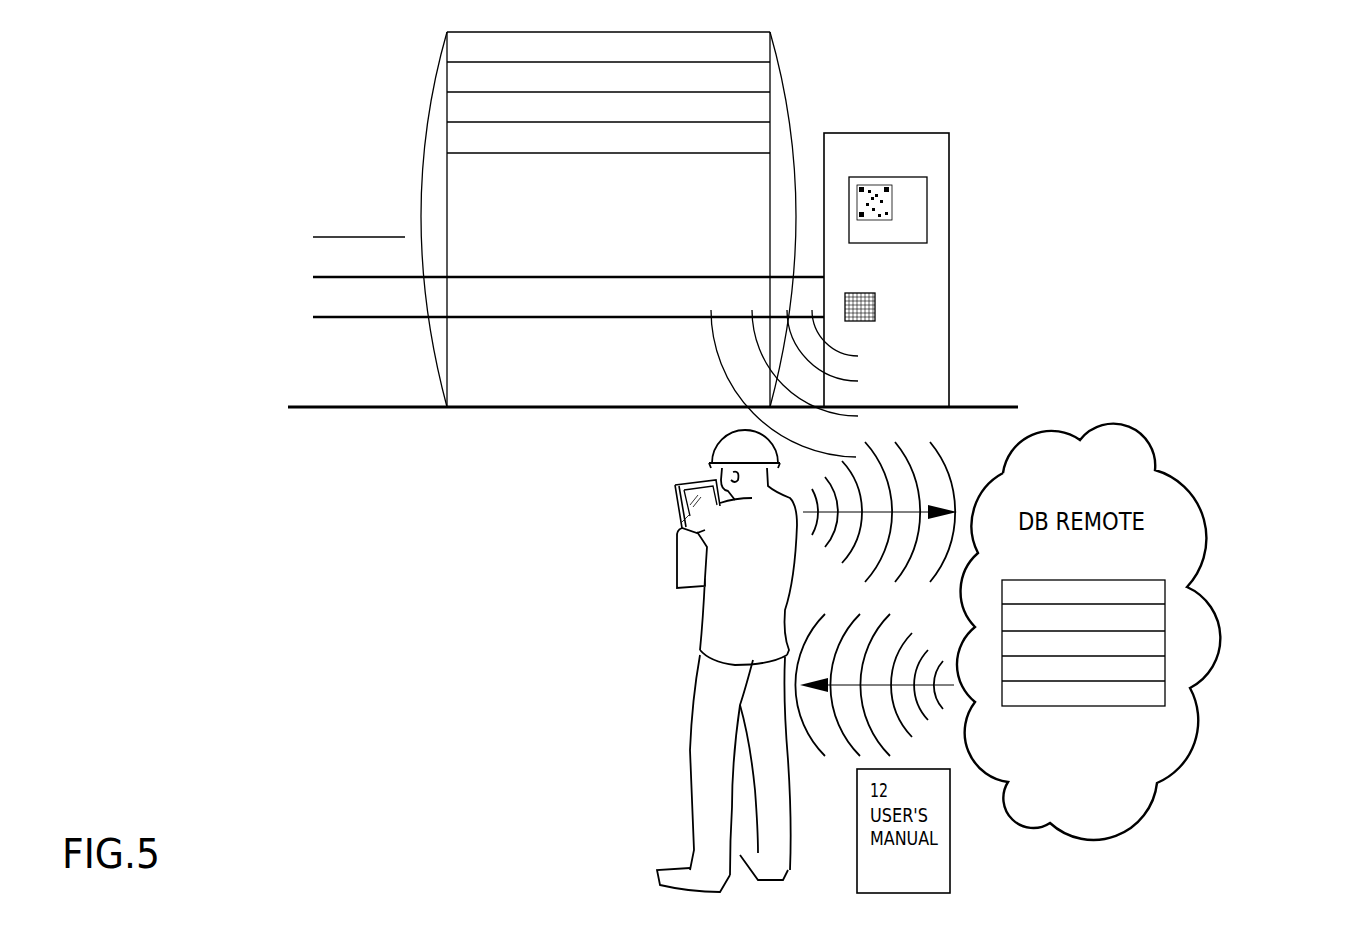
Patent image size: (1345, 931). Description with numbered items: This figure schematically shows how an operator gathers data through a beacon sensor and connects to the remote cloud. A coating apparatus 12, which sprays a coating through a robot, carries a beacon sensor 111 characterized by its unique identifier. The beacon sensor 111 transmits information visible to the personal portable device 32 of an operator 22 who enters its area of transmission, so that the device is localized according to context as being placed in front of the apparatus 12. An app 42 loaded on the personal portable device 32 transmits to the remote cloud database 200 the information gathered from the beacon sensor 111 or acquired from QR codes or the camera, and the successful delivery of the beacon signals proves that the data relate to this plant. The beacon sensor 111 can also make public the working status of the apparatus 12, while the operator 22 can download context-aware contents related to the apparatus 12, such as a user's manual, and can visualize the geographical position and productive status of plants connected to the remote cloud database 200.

The apparatus for spraying a coating through a robot 12 is at (893, 68).
The beacon sensor 111 is at (857, 310).
The operator 22 is at (727, 620).
The personal portable device 32 is at (662, 527).
The app 42 is at (683, 482).
The remote cloud database 200 is at (1095, 645).